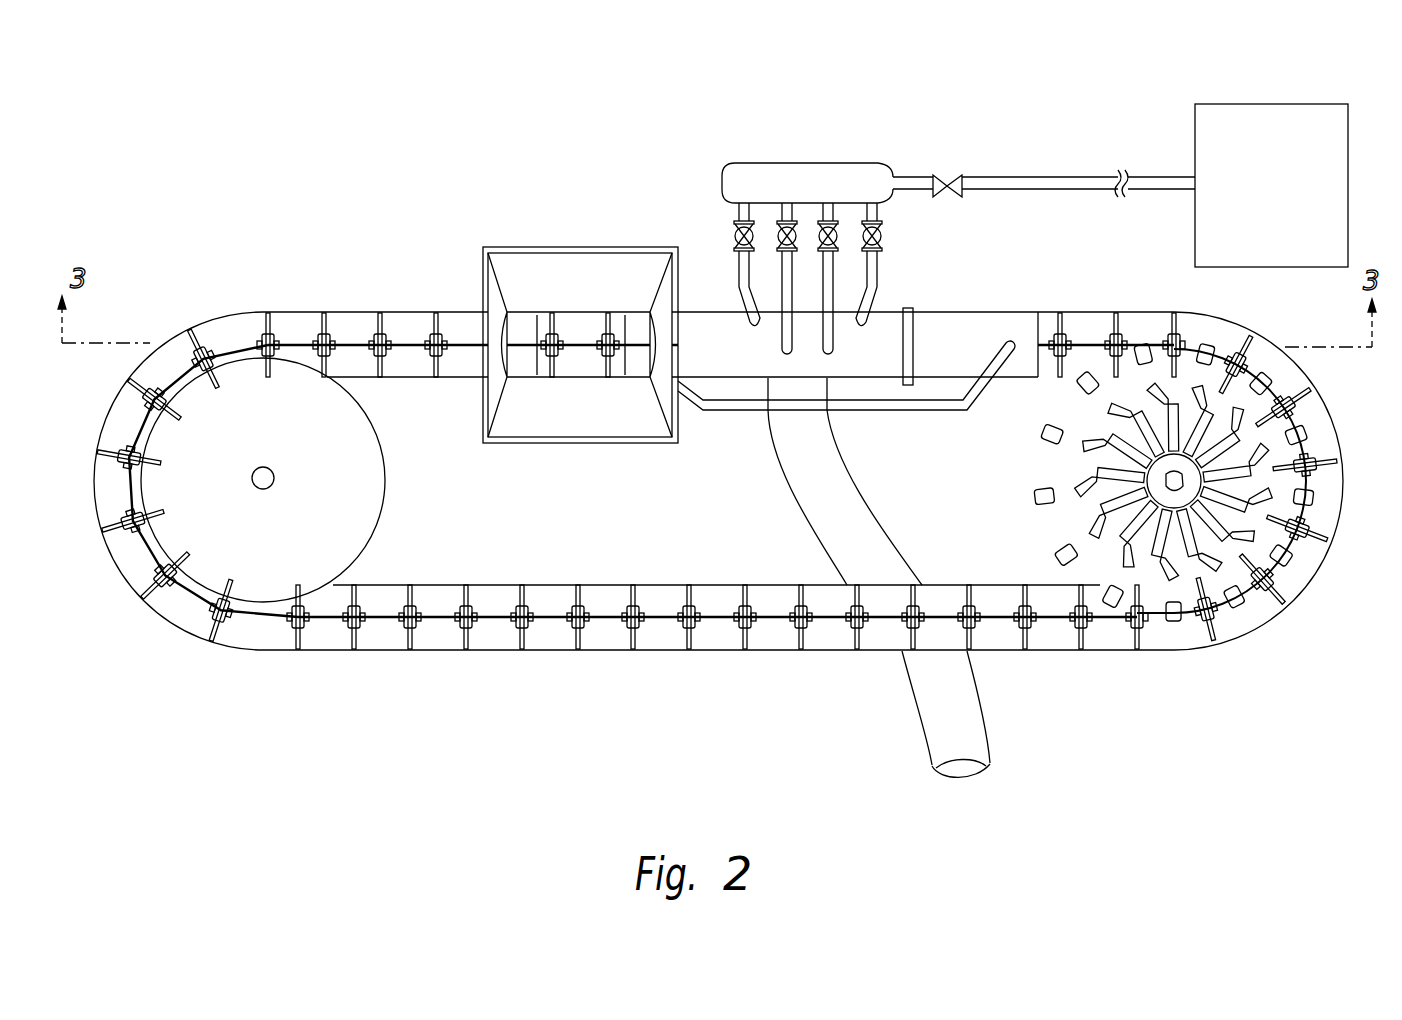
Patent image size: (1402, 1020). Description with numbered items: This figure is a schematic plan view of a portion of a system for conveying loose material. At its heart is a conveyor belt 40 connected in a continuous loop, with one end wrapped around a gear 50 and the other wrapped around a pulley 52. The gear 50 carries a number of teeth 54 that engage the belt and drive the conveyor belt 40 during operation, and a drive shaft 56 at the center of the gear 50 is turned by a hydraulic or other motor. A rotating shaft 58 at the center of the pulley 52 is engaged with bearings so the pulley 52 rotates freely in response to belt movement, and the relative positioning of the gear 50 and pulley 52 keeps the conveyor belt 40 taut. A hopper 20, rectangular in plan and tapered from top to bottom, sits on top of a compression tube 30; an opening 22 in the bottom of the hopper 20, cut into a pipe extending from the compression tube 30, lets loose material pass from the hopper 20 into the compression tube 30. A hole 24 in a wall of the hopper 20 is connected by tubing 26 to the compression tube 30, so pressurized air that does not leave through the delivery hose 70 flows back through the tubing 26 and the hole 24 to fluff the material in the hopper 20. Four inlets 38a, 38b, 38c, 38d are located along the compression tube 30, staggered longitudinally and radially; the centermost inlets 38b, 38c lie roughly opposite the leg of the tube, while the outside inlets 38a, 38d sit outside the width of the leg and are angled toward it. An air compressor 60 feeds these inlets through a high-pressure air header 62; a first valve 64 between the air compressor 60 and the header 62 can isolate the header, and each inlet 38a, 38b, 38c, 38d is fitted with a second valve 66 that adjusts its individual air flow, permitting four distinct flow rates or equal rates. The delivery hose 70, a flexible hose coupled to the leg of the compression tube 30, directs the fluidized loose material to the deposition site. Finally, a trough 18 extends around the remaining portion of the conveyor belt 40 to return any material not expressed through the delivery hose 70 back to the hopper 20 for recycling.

The trough 18 is at (1132, 305).
The hopper 20 is at (585, 247).
The opening 22 is at (577, 380).
The hole 24 is at (655, 380).
The tubing 26 is at (908, 410).
The compression tube 30 is at (712, 312).
The inlet 38a is at (737, 273).
The inlet 38b is at (792, 297).
The inlet 38c is at (836, 300).
The inlet 38d is at (923, 264).
The conveyor belt 40 is at (352, 337).
The gear 50 is at (1247, 607).
The pulley 52 is at (273, 622).
The teeth 54 is at (1290, 563).
The drive shaft 56 is at (1190, 483).
The rotating shaft 58 is at (263, 490).
The air compressor 60 is at (1270, 104).
The high-pressure air header 62 is at (828, 163).
The first valve 64 is at (945, 175).
The second valve 66 is at (887, 238).
The delivery hose 70 is at (922, 708).